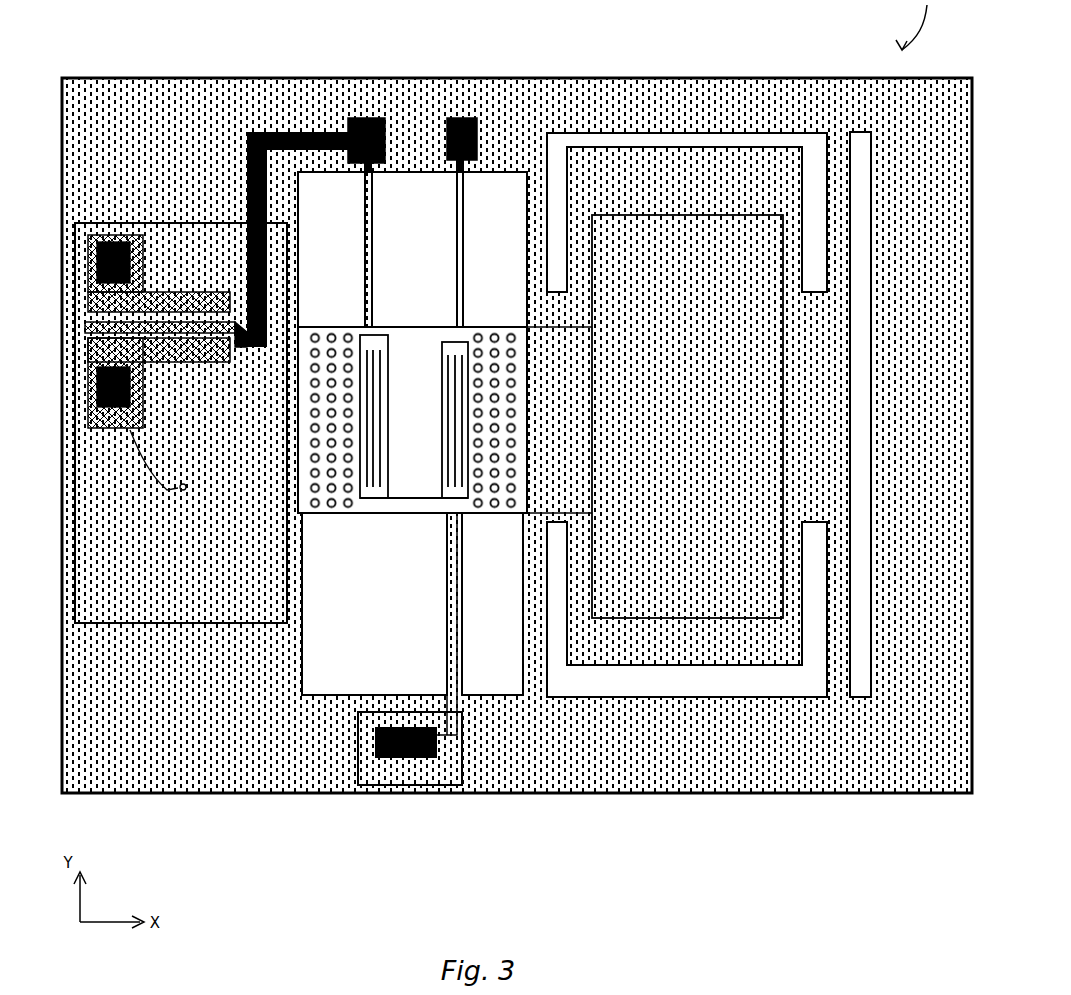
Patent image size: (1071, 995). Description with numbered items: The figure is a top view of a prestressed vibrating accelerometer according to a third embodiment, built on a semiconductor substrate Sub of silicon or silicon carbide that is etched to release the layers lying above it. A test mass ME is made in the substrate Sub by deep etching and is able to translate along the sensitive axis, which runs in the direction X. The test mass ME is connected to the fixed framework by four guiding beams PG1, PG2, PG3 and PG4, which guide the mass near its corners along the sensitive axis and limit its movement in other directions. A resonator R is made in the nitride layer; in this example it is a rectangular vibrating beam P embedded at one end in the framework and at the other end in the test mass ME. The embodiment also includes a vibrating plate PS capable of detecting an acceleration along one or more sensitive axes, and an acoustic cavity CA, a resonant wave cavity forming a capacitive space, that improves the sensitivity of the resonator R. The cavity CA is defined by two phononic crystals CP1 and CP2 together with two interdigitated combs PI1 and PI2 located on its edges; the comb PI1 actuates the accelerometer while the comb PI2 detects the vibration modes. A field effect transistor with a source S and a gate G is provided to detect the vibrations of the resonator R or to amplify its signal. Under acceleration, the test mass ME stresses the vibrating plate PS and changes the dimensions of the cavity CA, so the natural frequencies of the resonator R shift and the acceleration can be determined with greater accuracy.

The substrate Sub is at (155, 100).
The source S is at (128, 247).
The gate G is at (93, 433).
The acoustic cavity CA is at (405, 440).
The resonator R is at (430, 345).
The interdigitated comb PI1 is at (368, 500).
The interdigitated comb PI2 is at (445, 500).
The phononic crystal CP1 is at (312, 513).
The phononic crystal CP2 is at (493, 513).
The vibrating plate PS is at (463, 700).
The guiding beam PG1 is at (535, 170).
The guiding beam PG2 is at (840, 153).
The guiding beam PG3 is at (527, 643).
The guiding beam PG4 is at (833, 657).
The test mass ME is at (747, 635).
The vibrating beam P is at (652, 210).